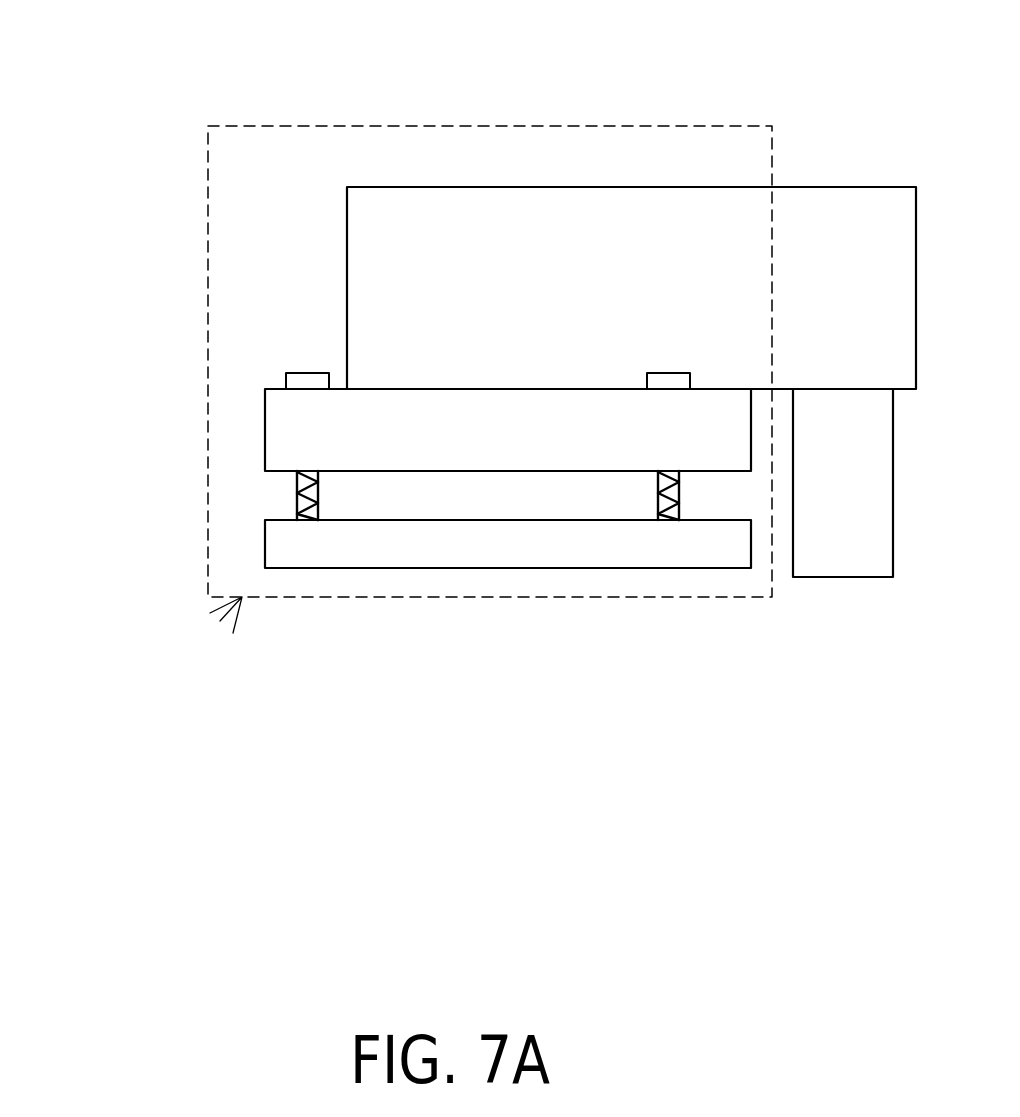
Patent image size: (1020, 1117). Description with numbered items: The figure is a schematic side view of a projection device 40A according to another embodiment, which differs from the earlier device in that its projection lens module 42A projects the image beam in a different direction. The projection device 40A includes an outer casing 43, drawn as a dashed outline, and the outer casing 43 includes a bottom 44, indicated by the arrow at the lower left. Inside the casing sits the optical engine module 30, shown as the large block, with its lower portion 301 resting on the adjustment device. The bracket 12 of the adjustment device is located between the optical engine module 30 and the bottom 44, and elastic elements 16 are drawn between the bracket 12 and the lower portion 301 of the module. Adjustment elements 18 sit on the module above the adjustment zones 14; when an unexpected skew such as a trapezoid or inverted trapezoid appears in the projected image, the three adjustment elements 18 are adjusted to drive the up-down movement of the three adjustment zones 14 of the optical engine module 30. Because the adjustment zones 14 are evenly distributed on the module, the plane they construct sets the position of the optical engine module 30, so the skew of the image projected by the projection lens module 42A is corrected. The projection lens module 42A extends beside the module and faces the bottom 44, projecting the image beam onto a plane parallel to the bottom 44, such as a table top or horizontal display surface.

The projection device 40A is at (166, 49).
The outer casing 43 is at (314, 126).
The optical engine module 30 is at (519, 215).
The adjustment zone region of optical engine module 301 is at (287, 432).
The adjustment element 18 is at (673, 382).
The adjustment zone 14 is at (633, 368).
The elastic element 16 is at (680, 495).
The bracket 12 is at (523, 545).
The projection lens module 42A is at (845, 548).
The bottom 44 is at (212, 627).